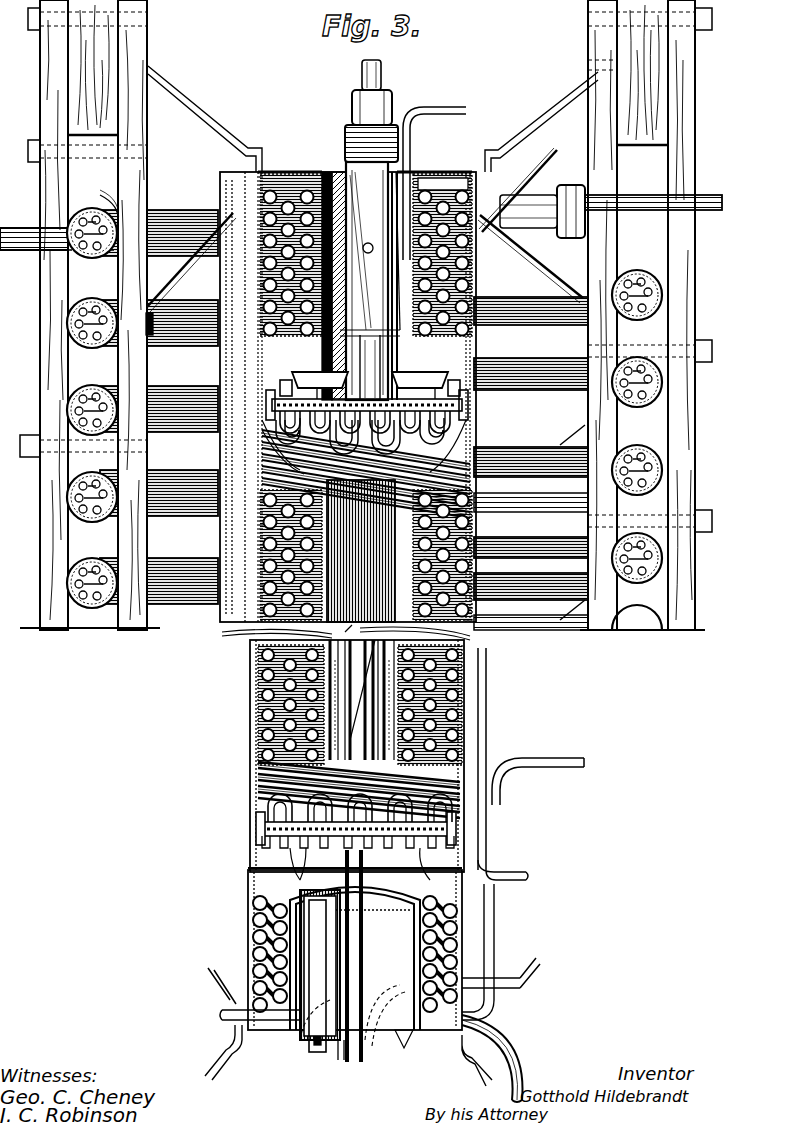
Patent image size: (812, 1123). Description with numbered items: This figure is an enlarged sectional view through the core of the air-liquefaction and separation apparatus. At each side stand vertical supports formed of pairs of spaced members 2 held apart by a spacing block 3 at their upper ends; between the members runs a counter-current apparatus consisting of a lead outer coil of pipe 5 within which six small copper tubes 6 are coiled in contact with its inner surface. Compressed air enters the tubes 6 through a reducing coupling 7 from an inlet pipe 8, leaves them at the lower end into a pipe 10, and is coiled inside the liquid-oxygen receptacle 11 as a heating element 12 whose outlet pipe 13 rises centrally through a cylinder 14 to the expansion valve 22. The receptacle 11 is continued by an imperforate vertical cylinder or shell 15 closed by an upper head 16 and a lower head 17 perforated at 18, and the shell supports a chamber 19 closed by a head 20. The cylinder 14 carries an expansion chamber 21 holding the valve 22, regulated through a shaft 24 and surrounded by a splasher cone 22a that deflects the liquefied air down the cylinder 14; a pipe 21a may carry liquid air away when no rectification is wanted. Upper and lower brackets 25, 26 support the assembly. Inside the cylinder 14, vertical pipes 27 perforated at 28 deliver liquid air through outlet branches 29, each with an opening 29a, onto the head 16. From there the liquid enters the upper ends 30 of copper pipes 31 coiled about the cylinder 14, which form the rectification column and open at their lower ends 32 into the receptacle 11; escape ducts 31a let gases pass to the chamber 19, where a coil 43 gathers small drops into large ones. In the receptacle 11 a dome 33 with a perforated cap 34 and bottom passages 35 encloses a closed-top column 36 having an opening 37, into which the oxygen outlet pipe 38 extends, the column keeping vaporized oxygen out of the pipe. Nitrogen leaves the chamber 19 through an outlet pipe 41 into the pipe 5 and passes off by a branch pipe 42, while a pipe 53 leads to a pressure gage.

The spaced members 2 is at (40, 140).
The spacing block 3 is at (368, 75).
The outer coil of pipe 5 is at (170, 215).
The small conduits or tubes 6 is at (92, 225).
The reducing coupling or nipple 7 is at (562, 190).
The inlet pipe 8 is at (706, 212).
The pipe 10 is at (228, 1022).
The chamber or receptacle 11 is at (250, 940).
The heating element 12 is at (250, 912).
The outlet pipe 13 is at (365, 932).
The cylinder 14 is at (486, 644).
The vertical cylinder or shell 15 is at (470, 606).
The head 16 is at (468, 426).
The head 17 is at (258, 842).
The perforations 18 is at (490, 810).
The chamber 19 is at (468, 352).
The head 20 is at (305, 172).
The expansion chamber 21 is at (396, 322).
The pipe 21a is at (455, 108).
The expansion valve 22 is at (352, 188).
The splasher cone 22a is at (400, 178).
The shaft 24 is at (382, 72).
The upper bracket 25 is at (228, 125).
The lower bracket 26 is at (482, 1074).
The vertically disposed pipes 27 is at (348, 560).
The perforations 28 is at (400, 628).
The outlet branches 29 is at (302, 372).
The opening 29a is at (262, 440).
The upper ends 30 is at (520, 872).
The pipes or coils 31 is at (345, 540).
The escape ducts 31a is at (500, 360).
The lower ends 32 is at (288, 852).
The dome or bell 33 is at (420, 968).
The perforated top or cap 34 is at (412, 876).
The passages 35 is at (302, 1040).
The closed top column 36 is at (338, 920).
The opening 37 is at (335, 1050).
The pipe 38 is at (378, 945).
The outlet pipe 41 is at (236, 178).
The branch pipe 42 is at (30, 230).
The coil 43 is at (240, 268).
The pipe 53 is at (496, 940).